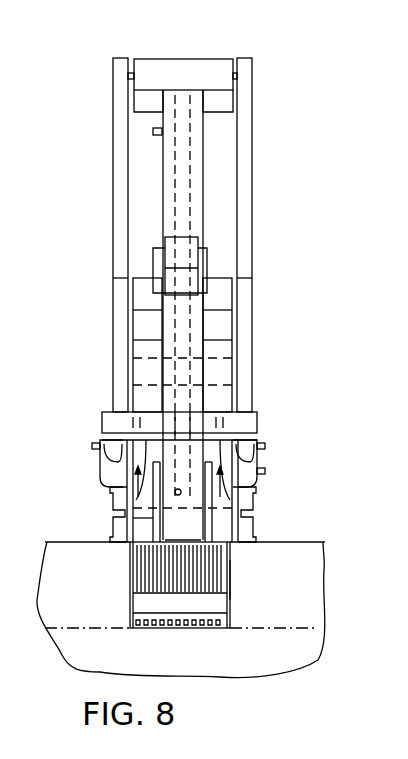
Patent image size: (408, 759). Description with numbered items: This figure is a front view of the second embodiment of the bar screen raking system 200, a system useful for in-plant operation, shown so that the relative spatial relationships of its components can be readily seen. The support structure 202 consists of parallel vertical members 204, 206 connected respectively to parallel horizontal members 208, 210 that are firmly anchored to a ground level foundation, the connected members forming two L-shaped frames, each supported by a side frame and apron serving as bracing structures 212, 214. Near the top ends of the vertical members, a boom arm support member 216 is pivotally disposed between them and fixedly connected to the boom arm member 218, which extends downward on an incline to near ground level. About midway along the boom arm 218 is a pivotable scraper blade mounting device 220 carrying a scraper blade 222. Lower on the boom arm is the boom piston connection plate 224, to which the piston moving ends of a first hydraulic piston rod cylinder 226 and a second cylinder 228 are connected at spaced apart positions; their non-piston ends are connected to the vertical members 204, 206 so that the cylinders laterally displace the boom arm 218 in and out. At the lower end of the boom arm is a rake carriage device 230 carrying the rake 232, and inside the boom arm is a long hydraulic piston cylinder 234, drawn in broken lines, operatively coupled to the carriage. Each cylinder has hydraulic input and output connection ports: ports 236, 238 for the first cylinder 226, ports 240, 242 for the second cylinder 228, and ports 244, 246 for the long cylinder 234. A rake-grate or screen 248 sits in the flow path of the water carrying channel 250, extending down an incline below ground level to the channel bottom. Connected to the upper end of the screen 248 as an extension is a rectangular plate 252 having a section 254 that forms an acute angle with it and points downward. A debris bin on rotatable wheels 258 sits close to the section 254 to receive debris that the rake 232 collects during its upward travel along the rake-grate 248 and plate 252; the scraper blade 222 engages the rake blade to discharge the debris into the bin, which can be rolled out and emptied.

The bar screen raking system 200 is at (294, 240).
The support structure 202 is at (109, 100).
The vertical member 204 is at (119, 221).
The vertical member 206 is at (247, 188).
The horizontal member 208 is at (118, 517).
The horizontal member 210 is at (240, 520).
The bracing structure 212 is at (118, 288).
The bracing structure 214 is at (247, 289).
The boom arm support member 216 is at (215, 73).
The boom arm member 218 is at (204, 157).
The scraper blade mounting device 220 is at (205, 267).
The scraper blade 222 is at (218, 330).
The boom piston connection plate 224 is at (248, 423).
The first hydraulic piston rod cylinder 226 is at (116, 478).
The second cylinder 228 is at (248, 474).
The rake carriage device 230 is at (152, 518).
The rake 232 is at (197, 603).
The long hydraulic piston cylinder 234 is at (175, 163).
The hydraulic connection port 236 is at (98, 453).
The hydraulic connection port 238 is at (96, 471).
The hydraulic connection port 240 is at (265, 445).
The hydraulic connection port 242 is at (265, 471).
The hydraulic connection port 244 is at (152, 131).
The hydraulic connection port 246 is at (178, 495).
The rake-grate 248 is at (231, 582).
The water carrying channel 250 is at (82, 605).
The rectangular plate 252 is at (127, 408).
The section 254 is at (143, 372).
The rotatable wheels 258 is at (143, 532).